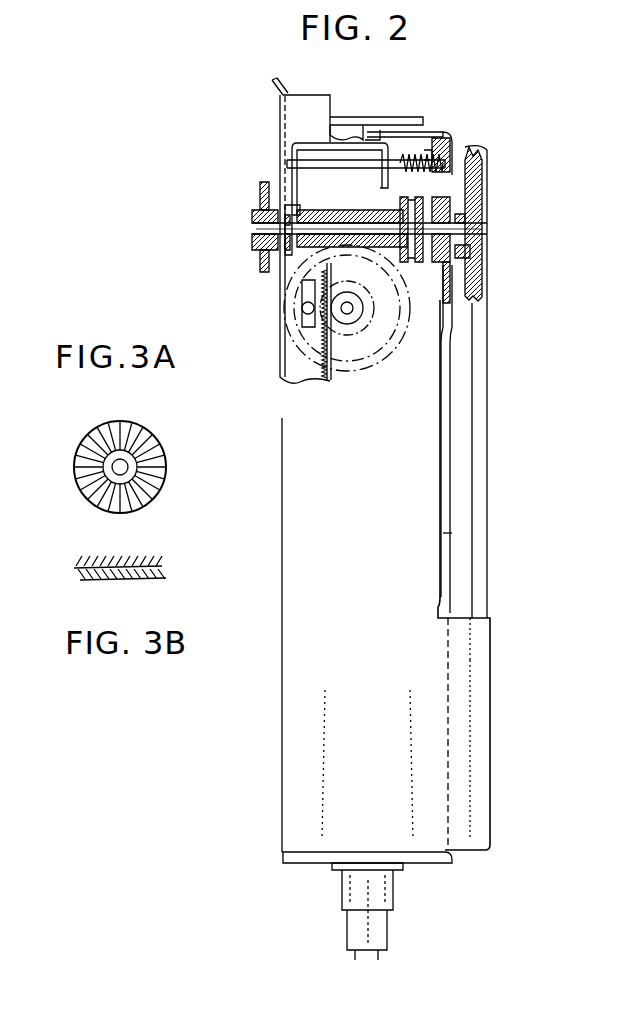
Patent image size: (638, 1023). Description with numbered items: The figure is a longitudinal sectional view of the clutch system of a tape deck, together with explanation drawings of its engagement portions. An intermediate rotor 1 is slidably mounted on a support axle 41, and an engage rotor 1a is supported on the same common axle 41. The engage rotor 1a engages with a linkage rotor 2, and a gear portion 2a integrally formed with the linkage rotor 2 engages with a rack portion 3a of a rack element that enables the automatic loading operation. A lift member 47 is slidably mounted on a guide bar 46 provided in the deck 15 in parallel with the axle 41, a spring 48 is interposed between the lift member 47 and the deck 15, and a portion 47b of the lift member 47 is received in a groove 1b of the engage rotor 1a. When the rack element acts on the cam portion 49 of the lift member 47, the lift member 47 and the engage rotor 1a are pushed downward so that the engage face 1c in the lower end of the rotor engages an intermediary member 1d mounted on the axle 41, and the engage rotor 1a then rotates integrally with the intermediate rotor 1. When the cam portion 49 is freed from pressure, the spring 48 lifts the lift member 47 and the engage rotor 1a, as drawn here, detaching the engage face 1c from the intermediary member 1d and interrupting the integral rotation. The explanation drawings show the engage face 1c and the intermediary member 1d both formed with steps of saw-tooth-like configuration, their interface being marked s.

In FIG. 2, the intermediate rotor 1 is at (481, 182).
In FIG. 2, the engage rotor 1a is at (367, 217).
In FIG. 2, the groove 1b is at (295, 247).
In FIG. 2, the engage face 1c is at (445, 140).
In FIG. 3A, the engage face 1c is at (165, 477).
In FIG. 3B, the engage face 1c is at (140, 557).
In FIG. 2, the intermediary member 1d is at (455, 262).
In FIG. 3B, the intermediary member 1d is at (120, 581).
In FIG. 2, the linkage rotor 2 is at (355, 370).
In FIG. 2, the gear portion 2a is at (363, 298).
In FIG. 2, the rack portion 3a is at (331, 338).
In FIG. 2, the deck 15 is at (447, 385).
In FIG. 2, the common axle 41 is at (385, 228).
In FIG. 2, the guide bar 46 is at (325, 168).
In FIG. 2, the lift member 47 is at (343, 132).
In FIG. 2, the portion of the lift member 47b is at (290, 197).
In FIG. 2, the spring 48 is at (404, 160).
In FIG. 2, the cam portion 49 is at (287, 178).
In FIG. 3B, the ratchet teeth interface s is at (152, 568).